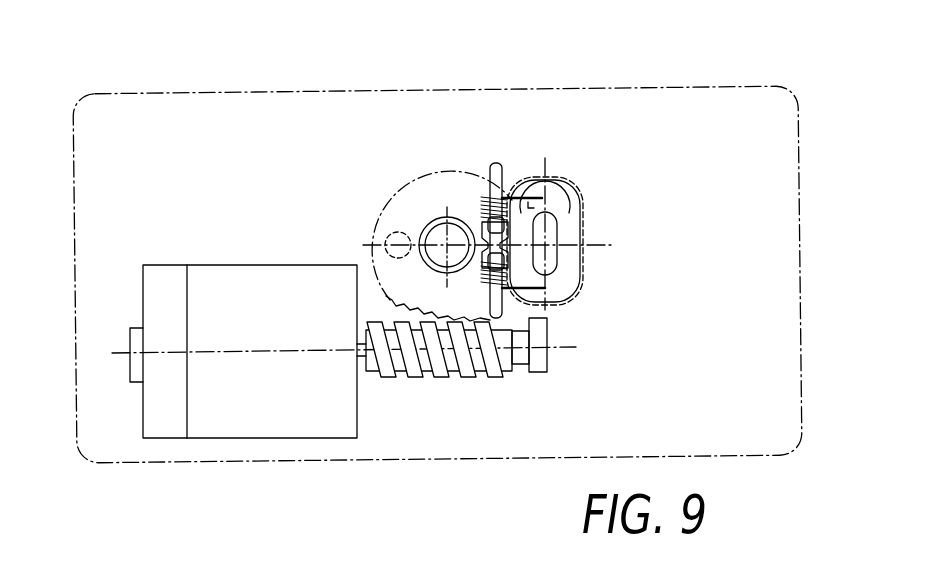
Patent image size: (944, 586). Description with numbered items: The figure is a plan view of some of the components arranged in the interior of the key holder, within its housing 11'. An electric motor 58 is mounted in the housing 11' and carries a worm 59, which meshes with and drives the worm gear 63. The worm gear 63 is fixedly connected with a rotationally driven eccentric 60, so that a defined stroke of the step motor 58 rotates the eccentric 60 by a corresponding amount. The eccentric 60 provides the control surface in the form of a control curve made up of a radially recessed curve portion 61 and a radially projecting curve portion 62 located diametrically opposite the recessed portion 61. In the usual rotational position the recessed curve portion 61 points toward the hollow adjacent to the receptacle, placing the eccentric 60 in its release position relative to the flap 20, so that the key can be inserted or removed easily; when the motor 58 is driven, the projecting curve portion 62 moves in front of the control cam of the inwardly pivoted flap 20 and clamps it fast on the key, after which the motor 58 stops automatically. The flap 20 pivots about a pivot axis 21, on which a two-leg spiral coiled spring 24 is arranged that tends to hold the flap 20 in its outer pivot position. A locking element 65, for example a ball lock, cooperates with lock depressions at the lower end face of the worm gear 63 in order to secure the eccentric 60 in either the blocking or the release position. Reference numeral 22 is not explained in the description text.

The housing 11' is at (470, 231).
The flap 20 is at (568, 232).
The pivot axis 21 is at (500, 171).
The slot 22 is at (550, 253).
The spiral coiled spring 24 is at (563, 200).
The electric motor 58 is at (253, 397).
The worm 59 is at (500, 373).
The eccentric 60 is at (437, 217).
The recessed curve portion 61 is at (449, 207).
The projecting curve portion 62 is at (420, 238).
The worm gear 63 is at (374, 229).
The locking element 65 is at (385, 253).